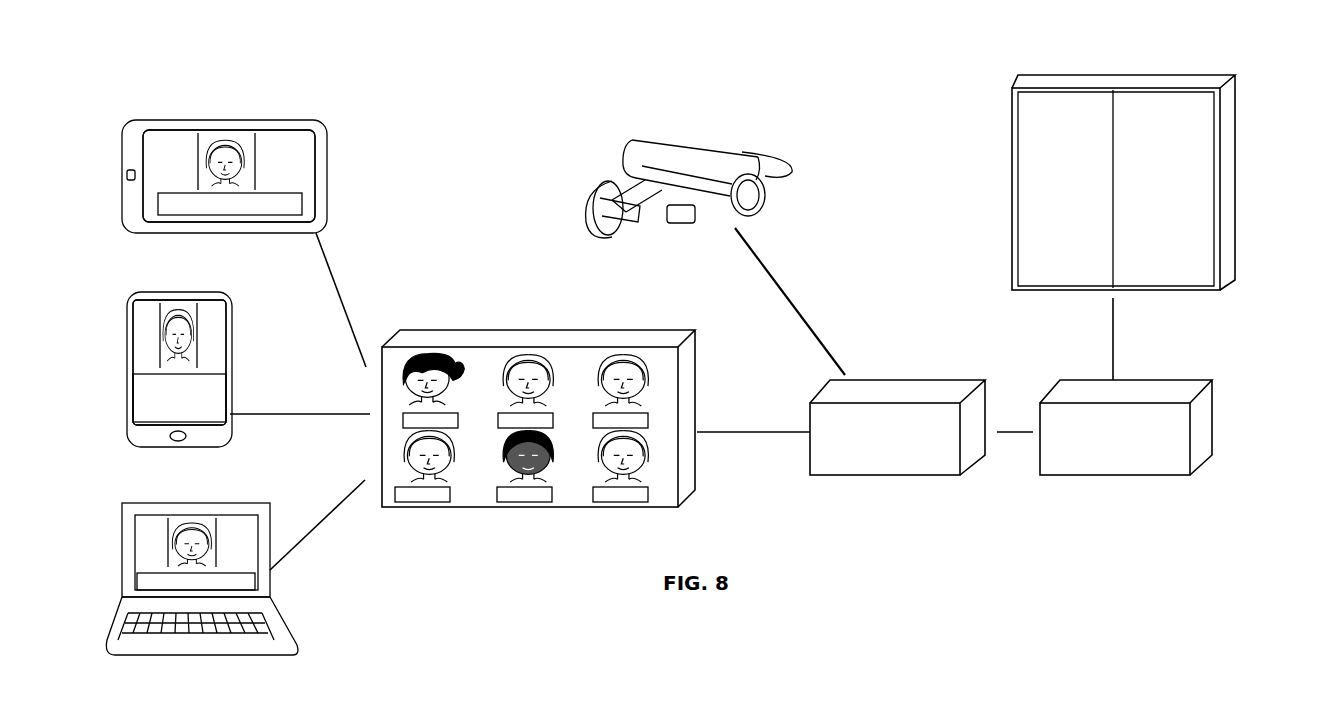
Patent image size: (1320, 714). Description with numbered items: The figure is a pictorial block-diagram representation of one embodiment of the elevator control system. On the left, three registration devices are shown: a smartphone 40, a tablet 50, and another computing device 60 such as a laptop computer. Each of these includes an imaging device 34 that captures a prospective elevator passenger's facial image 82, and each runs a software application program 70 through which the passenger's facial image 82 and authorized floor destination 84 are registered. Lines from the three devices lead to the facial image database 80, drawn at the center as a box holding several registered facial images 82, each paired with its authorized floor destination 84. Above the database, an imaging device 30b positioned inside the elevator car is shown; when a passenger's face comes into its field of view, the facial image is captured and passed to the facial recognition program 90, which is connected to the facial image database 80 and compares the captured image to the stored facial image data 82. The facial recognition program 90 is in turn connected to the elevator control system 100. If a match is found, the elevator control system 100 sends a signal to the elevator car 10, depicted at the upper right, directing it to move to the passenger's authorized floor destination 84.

The elevator car 10 is at (1240, 164).
The imaging device 30b is at (705, 145).
The imaging device 34 is at (316, 167).
The smartphone 40 is at (130, 393).
The tablet 50 is at (118, 150).
The other computing device 60 is at (120, 555).
The software application program 70 is at (178, 128).
The facial image database 80 is at (572, 503).
The facial image 82 is at (245, 140).
The authorized floor destination 84 is at (302, 204).
The facial recognition program 90 is at (922, 465).
The elevator control system 100 is at (1150, 465).